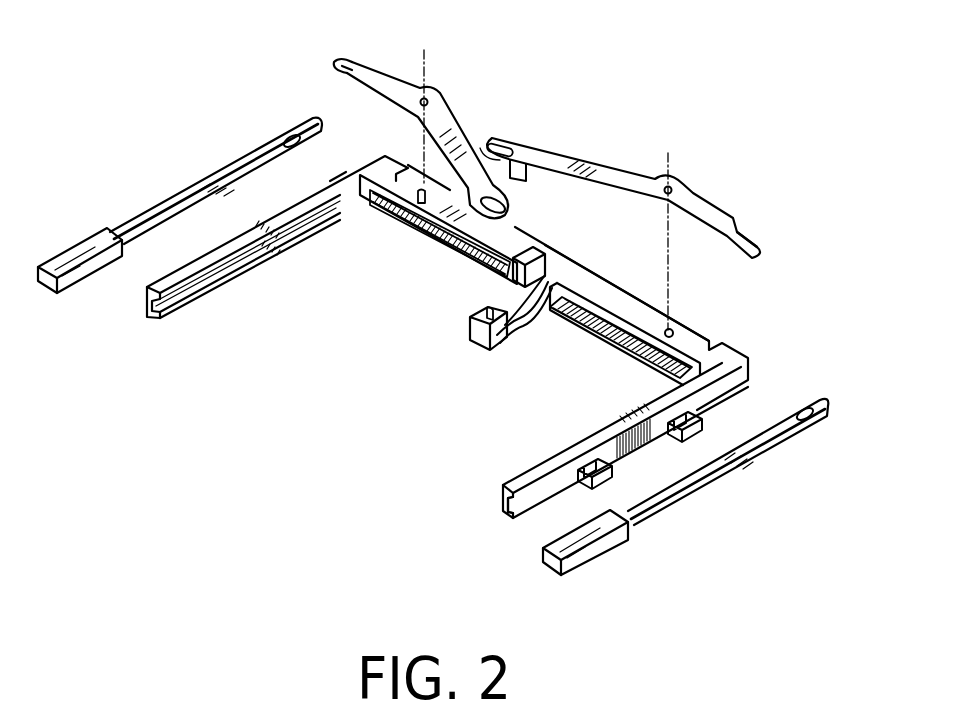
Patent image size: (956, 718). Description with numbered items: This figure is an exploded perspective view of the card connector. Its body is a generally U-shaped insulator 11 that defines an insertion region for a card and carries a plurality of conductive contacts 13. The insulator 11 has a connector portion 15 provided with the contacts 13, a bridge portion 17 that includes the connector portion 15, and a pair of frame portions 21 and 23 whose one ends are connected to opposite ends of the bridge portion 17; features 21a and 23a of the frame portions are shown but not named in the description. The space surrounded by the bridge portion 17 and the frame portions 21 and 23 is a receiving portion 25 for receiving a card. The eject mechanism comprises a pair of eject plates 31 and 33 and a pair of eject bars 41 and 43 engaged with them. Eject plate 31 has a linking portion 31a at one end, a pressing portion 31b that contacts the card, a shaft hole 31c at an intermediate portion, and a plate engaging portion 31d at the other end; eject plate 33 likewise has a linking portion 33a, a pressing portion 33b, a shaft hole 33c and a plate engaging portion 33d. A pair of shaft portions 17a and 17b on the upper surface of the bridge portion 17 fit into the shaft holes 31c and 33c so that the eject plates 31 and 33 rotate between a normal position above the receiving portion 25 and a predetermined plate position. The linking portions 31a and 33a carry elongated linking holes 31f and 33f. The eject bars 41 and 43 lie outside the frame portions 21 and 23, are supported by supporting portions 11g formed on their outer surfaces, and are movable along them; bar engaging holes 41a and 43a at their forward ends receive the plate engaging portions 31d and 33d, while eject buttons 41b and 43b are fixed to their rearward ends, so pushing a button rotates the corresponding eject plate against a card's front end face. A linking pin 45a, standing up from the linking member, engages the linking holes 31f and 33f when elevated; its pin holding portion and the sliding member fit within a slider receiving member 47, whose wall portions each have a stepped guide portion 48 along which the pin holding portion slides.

The insulator 11 is at (583, 262).
The supporting portions 11g is at (705, 416).
The conductive contacts 13 is at (403, 214).
The connector portion 15 is at (430, 224).
The bridge portion 17 is at (607, 298).
The shaft portion 17a is at (365, 215).
The shaft portion 17b is at (674, 331).
The frame portion 21 is at (241, 238).
The guide groove of first guide rail 21a is at (190, 296).
The frame portion 23 is at (530, 506).
The channel of second guide rail 23a is at (503, 492).
The receiving portion 25 is at (383, 416).
The eject plate 31 is at (399, 83).
The linking portion 31a is at (508, 203).
The pressing portion 31b is at (419, 188).
The shaft hole 31c is at (430, 97).
The plate engaging portion 31d is at (337, 58).
The linking hole 31f is at (452, 250).
The eject plate 33 is at (712, 210).
The linking portion 33a is at (498, 140).
The pressing portion 33b is at (540, 170).
The shaft hole 33c is at (666, 184).
The plate engaging portion 33d is at (750, 245).
The linking hole 33f is at (516, 148).
The eject bar 41 is at (196, 192).
The bar engaging hole 41a is at (292, 136).
The eject button 41b is at (88, 240).
The eject bar 43 is at (713, 478).
The bar engaging hole 43a is at (815, 422).
The eject button 43b is at (605, 546).
The linking pin 45a is at (487, 330).
The slider receiving member 47 is at (469, 326).
The guide portion 48 is at (556, 250).